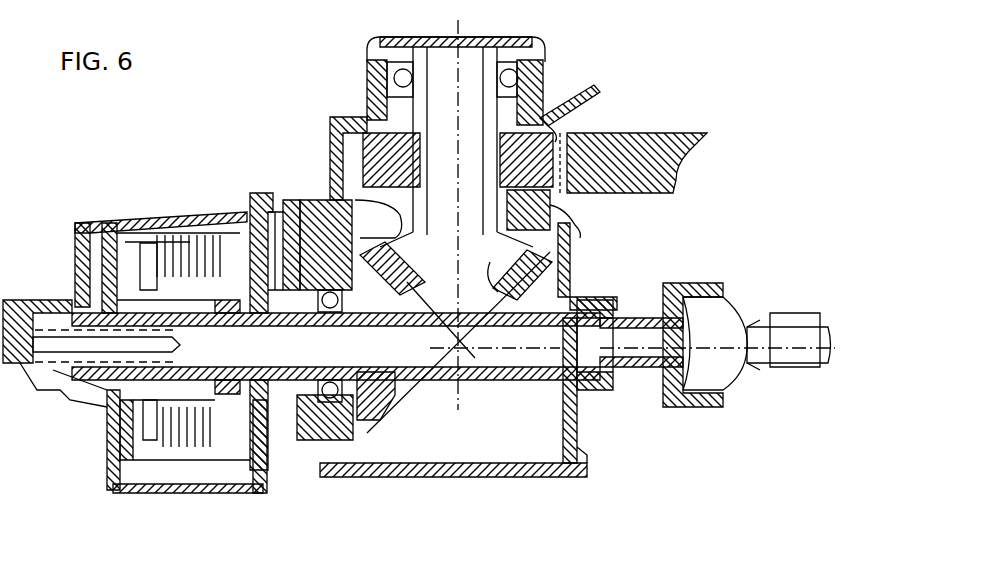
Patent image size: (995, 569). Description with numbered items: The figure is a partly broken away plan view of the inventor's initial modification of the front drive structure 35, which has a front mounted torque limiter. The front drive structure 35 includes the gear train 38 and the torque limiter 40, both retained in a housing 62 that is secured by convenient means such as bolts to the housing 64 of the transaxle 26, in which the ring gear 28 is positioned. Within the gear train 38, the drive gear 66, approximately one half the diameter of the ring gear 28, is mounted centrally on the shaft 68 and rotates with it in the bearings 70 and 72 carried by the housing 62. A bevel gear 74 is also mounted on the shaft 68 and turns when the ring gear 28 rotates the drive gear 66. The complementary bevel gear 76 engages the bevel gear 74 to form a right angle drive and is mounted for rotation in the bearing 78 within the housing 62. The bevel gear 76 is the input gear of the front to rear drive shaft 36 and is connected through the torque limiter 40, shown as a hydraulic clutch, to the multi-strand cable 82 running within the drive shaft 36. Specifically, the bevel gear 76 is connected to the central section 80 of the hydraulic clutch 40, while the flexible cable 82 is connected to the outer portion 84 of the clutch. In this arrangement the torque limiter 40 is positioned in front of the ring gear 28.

The transaxle 26 is at (706, 230).
The ring gear 28 is at (655, 133).
The front drive structure 35 is at (330, 137).
The front to rear drive shaft 36 is at (723, 357).
The gear train 38 is at (493, 352).
The torque limiter 40 is at (157, 500).
The housing 62 is at (367, 97).
The housing of the transaxle 64 is at (583, 232).
The drive gear 66 is at (533, 140).
The shaft 68 is at (477, 38).
The bearing 70 is at (381, 55).
The bearing 72 is at (404, 212).
The bevel gear 74 is at (490, 267).
The complementary bevel gear 76 is at (400, 417).
The bearing 78 is at (333, 372).
The central section of the hydraulic clutch 80 is at (227, 318).
The multi-strand cable 82 is at (790, 318).
The outer portion of the hydraulic clutch 84 is at (110, 435).